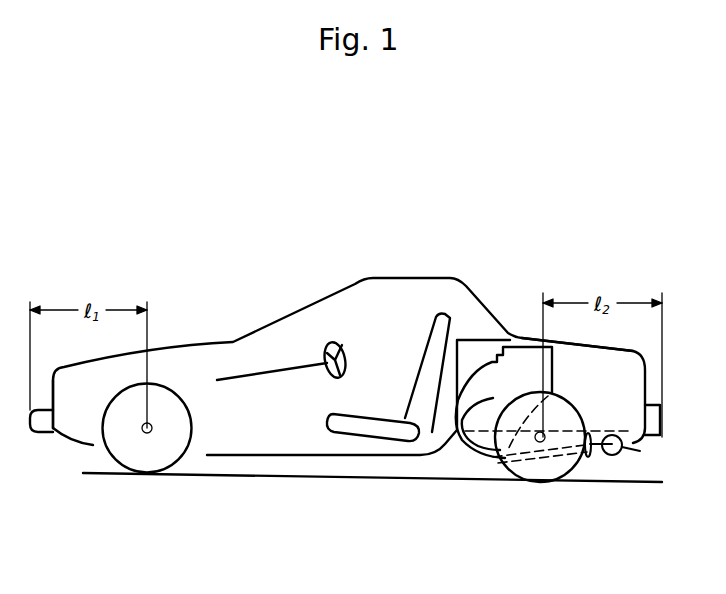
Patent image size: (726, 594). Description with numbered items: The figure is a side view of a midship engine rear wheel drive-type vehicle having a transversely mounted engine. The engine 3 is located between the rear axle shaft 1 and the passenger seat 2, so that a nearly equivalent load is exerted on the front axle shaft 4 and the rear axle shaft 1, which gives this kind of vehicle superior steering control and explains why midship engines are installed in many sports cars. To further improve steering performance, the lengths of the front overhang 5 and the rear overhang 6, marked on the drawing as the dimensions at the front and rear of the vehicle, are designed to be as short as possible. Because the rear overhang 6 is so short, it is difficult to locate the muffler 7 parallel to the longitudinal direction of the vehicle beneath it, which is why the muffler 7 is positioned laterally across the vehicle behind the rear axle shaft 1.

The rear axle shaft 1 is at (540, 445).
The passenger seat 2 is at (378, 433).
The engine 3 is at (520, 347).
The front axle shaft 4 is at (146, 433).
The front overhang 5 is at (68, 423).
The rear overhang 6 is at (627, 370).
The muffler 7 is at (608, 460).